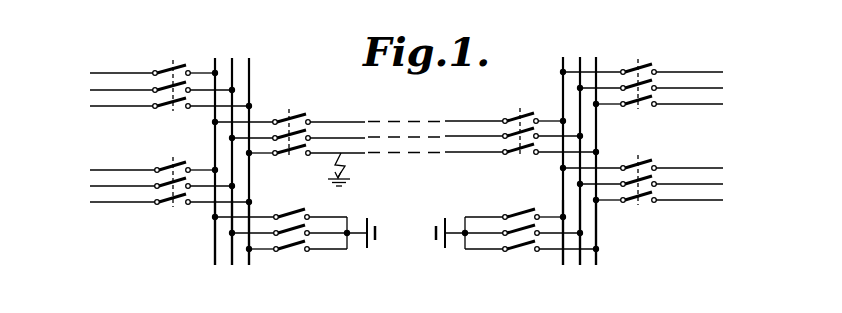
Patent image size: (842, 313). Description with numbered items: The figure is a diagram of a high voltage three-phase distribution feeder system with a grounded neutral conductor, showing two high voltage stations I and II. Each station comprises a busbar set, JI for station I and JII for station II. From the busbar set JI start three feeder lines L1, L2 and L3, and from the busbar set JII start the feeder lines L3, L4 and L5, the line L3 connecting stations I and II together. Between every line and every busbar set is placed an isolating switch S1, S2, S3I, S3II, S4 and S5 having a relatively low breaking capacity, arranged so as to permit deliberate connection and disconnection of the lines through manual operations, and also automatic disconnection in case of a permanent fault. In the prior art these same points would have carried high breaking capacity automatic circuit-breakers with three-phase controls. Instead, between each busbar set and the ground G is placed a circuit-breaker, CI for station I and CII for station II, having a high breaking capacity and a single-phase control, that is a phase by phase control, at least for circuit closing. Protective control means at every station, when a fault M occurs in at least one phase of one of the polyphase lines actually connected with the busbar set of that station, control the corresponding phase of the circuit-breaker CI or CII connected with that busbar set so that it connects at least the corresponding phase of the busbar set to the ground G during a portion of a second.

The high voltage station I is at (232, 149).
The high voltage station II is at (579, 148).
The busbar set JI is at (232, 246).
The busbar set JII is at (579, 246).
The feeder line L1 is at (108, 89).
The feeder line L2 is at (109, 186).
The feeder line L3 is at (407, 128).
The feeder line L4 is at (703, 88).
The feeder line L5 is at (703, 184).
The isolating switch S1 is at (202, 76).
The isolating switch S2 is at (203, 172).
The isolating switch S3I is at (262, 123).
The isolating switch S3II is at (551, 123).
The isolating switch S4 is at (609, 74).
The isolating switch S5 is at (609, 170).
The circuit-breaker CI is at (290, 220).
The circuit-breaker CII is at (522, 220).
The ground G is at (404, 221).
The fault M is at (347, 169).